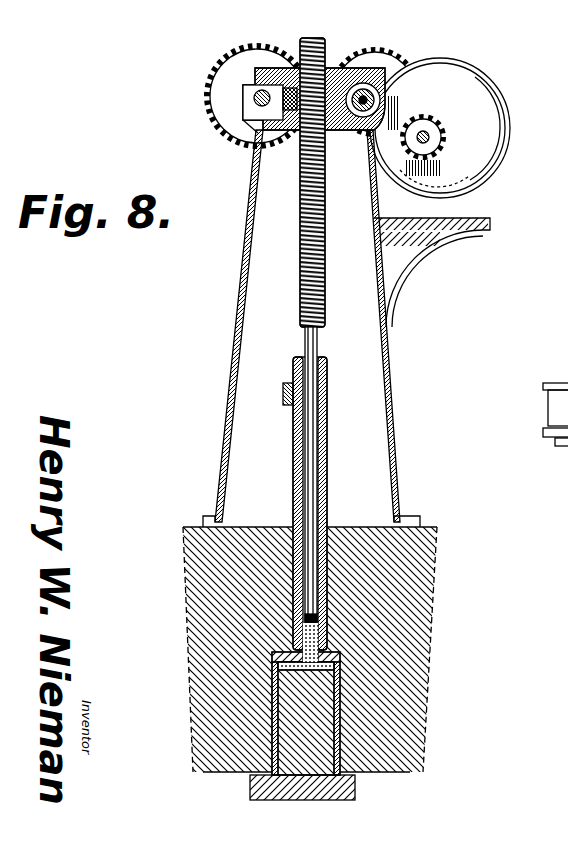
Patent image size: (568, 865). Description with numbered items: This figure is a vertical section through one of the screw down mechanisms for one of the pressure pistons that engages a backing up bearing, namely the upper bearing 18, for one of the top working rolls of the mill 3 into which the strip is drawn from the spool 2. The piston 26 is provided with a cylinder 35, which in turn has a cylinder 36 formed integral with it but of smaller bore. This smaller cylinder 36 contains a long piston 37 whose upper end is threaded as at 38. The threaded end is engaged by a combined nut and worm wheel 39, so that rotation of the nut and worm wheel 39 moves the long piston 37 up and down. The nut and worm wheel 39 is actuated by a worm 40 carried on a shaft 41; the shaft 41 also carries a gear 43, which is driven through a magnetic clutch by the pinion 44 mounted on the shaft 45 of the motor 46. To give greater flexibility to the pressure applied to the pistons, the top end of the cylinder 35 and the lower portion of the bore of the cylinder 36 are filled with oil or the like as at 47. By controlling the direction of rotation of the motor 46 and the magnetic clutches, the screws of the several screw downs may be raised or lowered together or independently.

The spool 2 is at (545, 387).
The mill 3 is at (412, 607).
The upper bearing 18 is at (356, 790).
The piston 26 is at (323, 727).
The cylinder 35 is at (272, 717).
The cylinder 36 is at (327, 513).
The long piston 37 is at (305, 486).
The threaded upper end 38 is at (323, 248).
The combined nut and worm wheel 39 is at (280, 122).
The worm 40 is at (392, 82).
The shaft 41 is at (382, 99).
The gear 43 is at (378, 54).
The pinion 44 is at (450, 137).
The shaft 45 is at (430, 143).
The motor 46 is at (493, 108).
The oil 47 is at (296, 645).